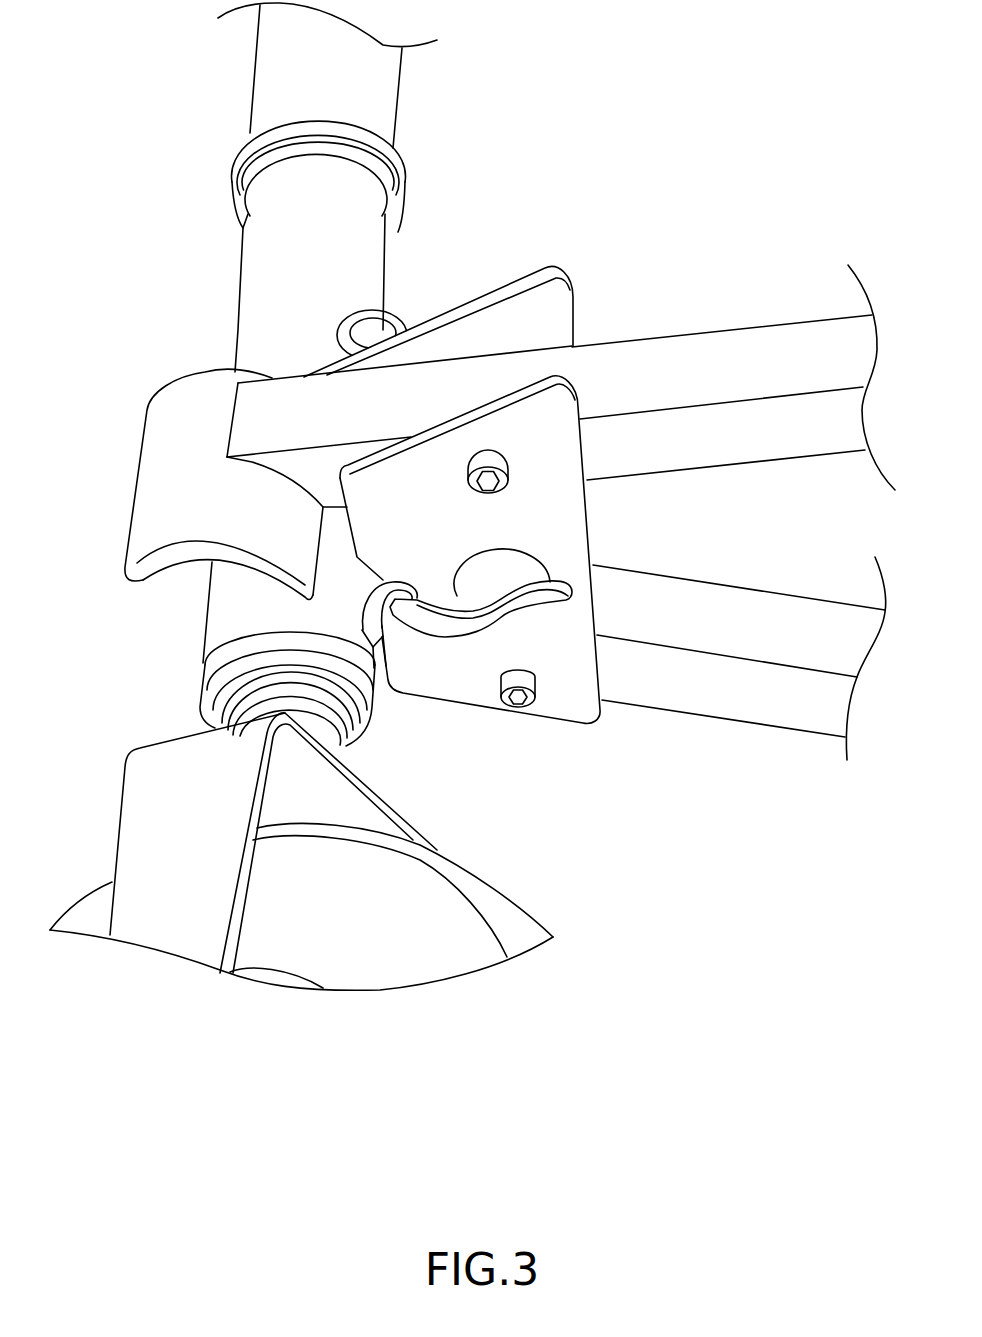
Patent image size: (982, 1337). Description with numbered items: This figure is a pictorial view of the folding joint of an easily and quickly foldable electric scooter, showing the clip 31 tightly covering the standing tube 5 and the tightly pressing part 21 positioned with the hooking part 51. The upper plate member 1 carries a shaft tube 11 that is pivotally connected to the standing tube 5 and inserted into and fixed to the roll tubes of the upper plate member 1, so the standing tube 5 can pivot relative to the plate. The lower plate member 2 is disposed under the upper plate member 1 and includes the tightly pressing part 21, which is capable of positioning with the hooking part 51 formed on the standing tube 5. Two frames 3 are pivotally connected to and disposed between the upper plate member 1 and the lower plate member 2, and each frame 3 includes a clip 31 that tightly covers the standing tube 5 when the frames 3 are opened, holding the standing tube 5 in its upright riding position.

The upper plate member 1 is at (588, 250).
The shaft tube 11 is at (378, 332).
The lower plate member 2 is at (623, 557).
The tightly pressing part 21 is at (470, 620).
The frame 3 is at (760, 518).
The clip 31 is at (188, 471).
The standing tube 5 is at (208, 295).
The hooking part 51 is at (375, 608).